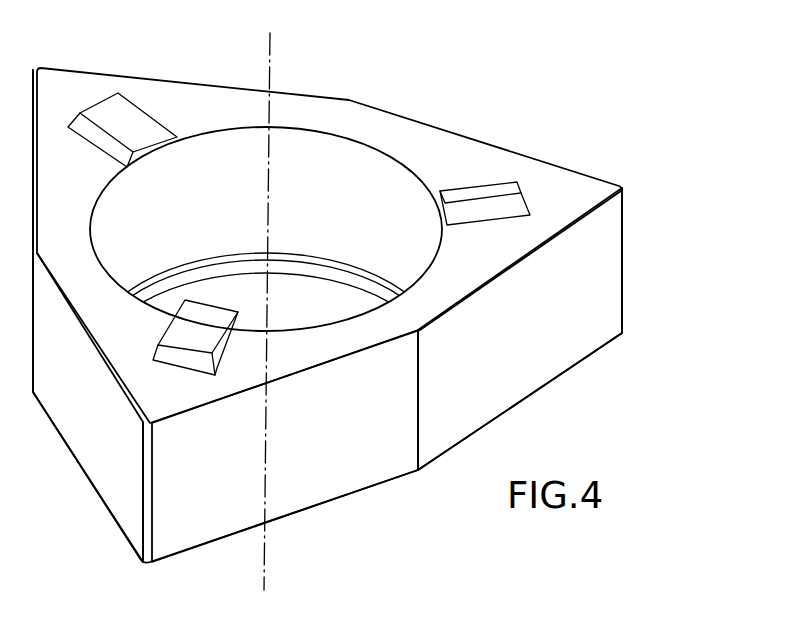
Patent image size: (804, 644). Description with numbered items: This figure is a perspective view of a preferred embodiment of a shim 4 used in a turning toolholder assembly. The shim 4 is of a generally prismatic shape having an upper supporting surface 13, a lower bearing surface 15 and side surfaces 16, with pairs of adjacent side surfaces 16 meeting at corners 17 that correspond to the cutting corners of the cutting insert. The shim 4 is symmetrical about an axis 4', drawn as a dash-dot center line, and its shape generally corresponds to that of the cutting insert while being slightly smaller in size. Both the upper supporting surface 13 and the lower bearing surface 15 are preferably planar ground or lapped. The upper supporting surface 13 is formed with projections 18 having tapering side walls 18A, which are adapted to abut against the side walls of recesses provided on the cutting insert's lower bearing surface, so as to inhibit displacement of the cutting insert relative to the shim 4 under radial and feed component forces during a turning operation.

The shim 4 is at (327, 294).
The axis 4' is at (294, 307).
The upper supporting surface 13 is at (400, 133).
The lower bearing surface 15 is at (337, 499).
The side surfaces 16 is at (572, 313).
The corners 17 is at (147, 485).
The projections 18 is at (484, 192).
The tapering side walls 18A is at (487, 210).